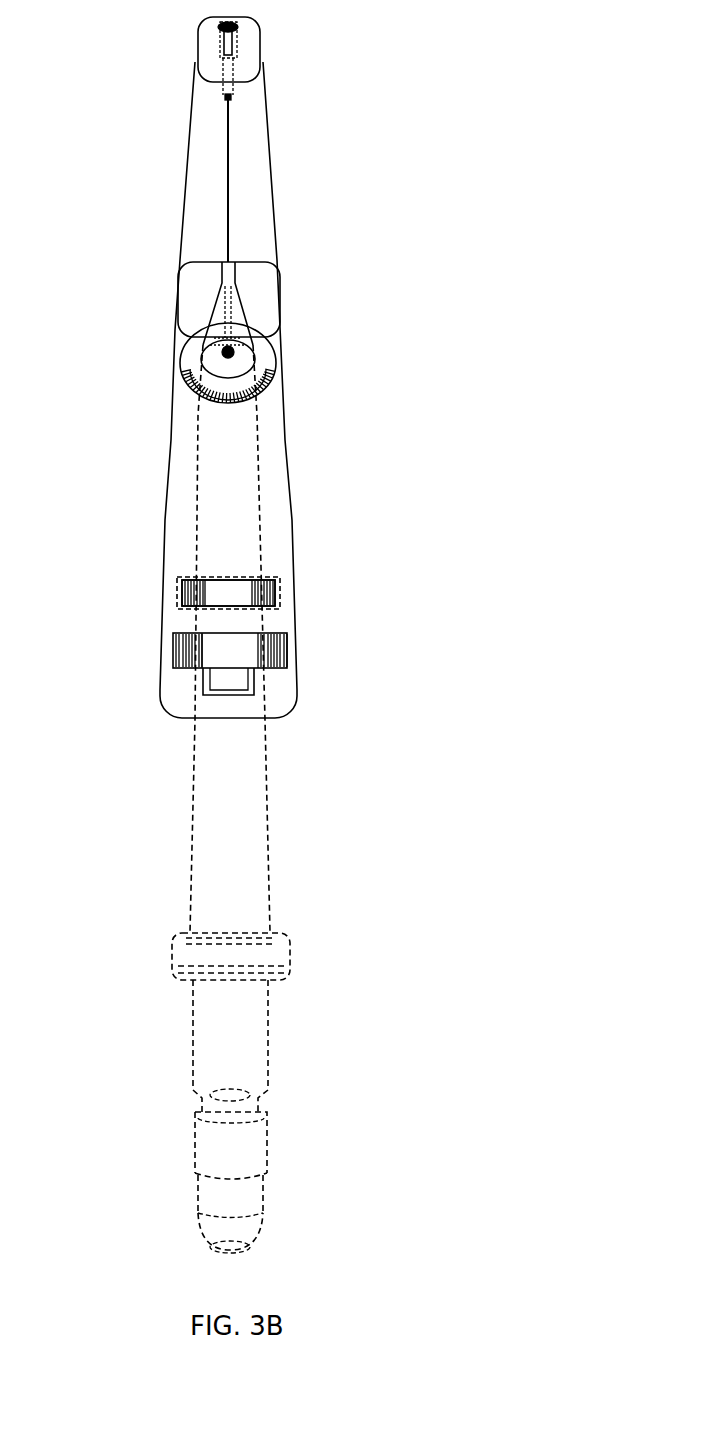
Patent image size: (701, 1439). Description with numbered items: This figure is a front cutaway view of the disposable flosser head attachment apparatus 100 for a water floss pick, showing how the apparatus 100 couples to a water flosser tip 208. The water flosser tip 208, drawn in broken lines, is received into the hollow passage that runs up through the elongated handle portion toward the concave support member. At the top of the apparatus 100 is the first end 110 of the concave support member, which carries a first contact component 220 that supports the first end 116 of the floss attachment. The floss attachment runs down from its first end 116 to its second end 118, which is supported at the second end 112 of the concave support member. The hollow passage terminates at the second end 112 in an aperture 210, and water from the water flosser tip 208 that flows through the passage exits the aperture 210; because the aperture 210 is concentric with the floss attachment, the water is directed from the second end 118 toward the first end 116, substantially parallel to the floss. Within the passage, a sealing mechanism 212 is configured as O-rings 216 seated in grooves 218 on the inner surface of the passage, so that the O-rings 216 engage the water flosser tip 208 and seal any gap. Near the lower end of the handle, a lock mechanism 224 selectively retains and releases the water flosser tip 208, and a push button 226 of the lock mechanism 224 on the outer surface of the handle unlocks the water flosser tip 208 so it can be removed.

The disposable flosser head attachment apparatus 100 is at (165, 338).
The first end of the concave support member 110 is at (249, 42).
The first contact component 220 is at (218, 31).
The first end of the floss attachment 116 is at (223, 100).
The second end of the floss attachment 118 is at (225, 257).
The second end of the concave support member 112 is at (270, 297).
The aperture 210 is at (236, 257).
The O-rings 216 is at (262, 366).
The sealing mechanism 212 is at (172, 590).
The grooves 218 is at (282, 590).
The lock mechanism 224 is at (287, 652).
The push button 226 is at (220, 682).
The water flosser tip 208 is at (252, 837).